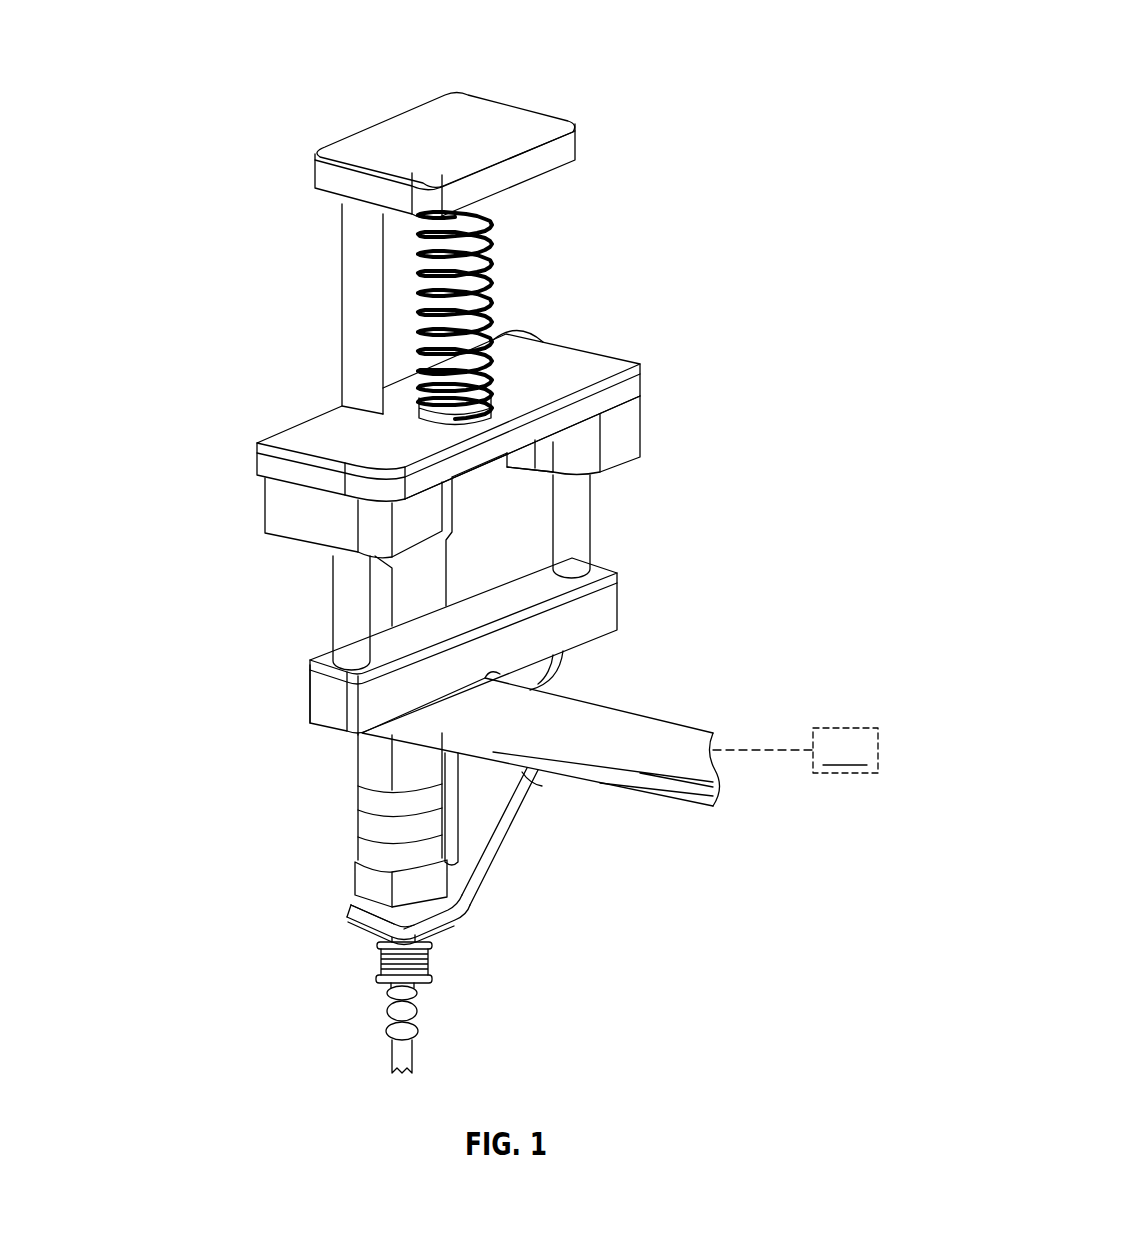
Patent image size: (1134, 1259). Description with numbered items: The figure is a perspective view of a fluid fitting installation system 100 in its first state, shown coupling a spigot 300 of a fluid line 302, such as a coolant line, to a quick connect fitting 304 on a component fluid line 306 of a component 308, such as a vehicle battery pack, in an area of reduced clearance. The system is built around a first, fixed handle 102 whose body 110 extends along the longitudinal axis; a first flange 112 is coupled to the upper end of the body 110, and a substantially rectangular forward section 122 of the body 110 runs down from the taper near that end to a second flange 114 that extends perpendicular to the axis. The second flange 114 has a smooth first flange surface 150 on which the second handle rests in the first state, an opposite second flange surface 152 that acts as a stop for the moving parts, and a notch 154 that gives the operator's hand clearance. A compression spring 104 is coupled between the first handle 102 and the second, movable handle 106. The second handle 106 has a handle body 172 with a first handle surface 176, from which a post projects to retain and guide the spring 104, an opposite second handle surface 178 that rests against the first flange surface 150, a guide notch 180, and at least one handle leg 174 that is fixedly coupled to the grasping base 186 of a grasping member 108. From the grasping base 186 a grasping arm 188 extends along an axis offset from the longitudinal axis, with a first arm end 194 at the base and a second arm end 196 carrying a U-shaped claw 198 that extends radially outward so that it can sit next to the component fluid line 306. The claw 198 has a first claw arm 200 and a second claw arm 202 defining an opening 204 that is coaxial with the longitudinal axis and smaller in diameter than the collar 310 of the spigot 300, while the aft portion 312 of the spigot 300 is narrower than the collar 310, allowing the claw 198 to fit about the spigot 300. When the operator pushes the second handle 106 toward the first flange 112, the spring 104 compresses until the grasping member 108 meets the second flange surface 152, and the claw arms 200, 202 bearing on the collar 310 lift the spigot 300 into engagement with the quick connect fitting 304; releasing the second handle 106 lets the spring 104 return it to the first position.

The fluid fitting installation system 100 is at (722, 36).
The first handle 102 is at (494, 145).
The spring 104 is at (500, 248).
The second handle 106 is at (655, 376).
The grasping member 108 is at (635, 597).
The body 110 is at (318, 293).
The first flange 112 is at (583, 141).
The second flange 114 is at (650, 440).
The forward section 122 is at (403, 290).
The first flange surface 150 is at (300, 483).
The second flange surface 152 is at (630, 457).
The notch 154 is at (487, 477).
The handle body 172 is at (498, 381).
The handle leg 174 is at (607, 531).
The first handle surface 176 is at (533, 343).
The second handle surface 178 is at (643, 395).
The guide notch 180 is at (410, 410).
The grasping base 186 is at (294, 688).
The grasping arm 188 is at (527, 829).
The first arm end 194 is at (527, 787).
The second arm end 196 is at (405, 915).
The claw 198 is at (344, 915).
The first claw arm 200 is at (415, 969).
The second claw arm 202 is at (450, 867).
The opening 204 is at (436, 903).
The spigot 300 is at (410, 1012).
The fluid line 302 is at (415, 1060).
The quick connect fitting 304 is at (360, 793).
The component fluid line 306 is at (667, 722).
The component 308 is at (795, 750).
The collar 310 is at (362, 882).
The aft portion 312 is at (440, 957).